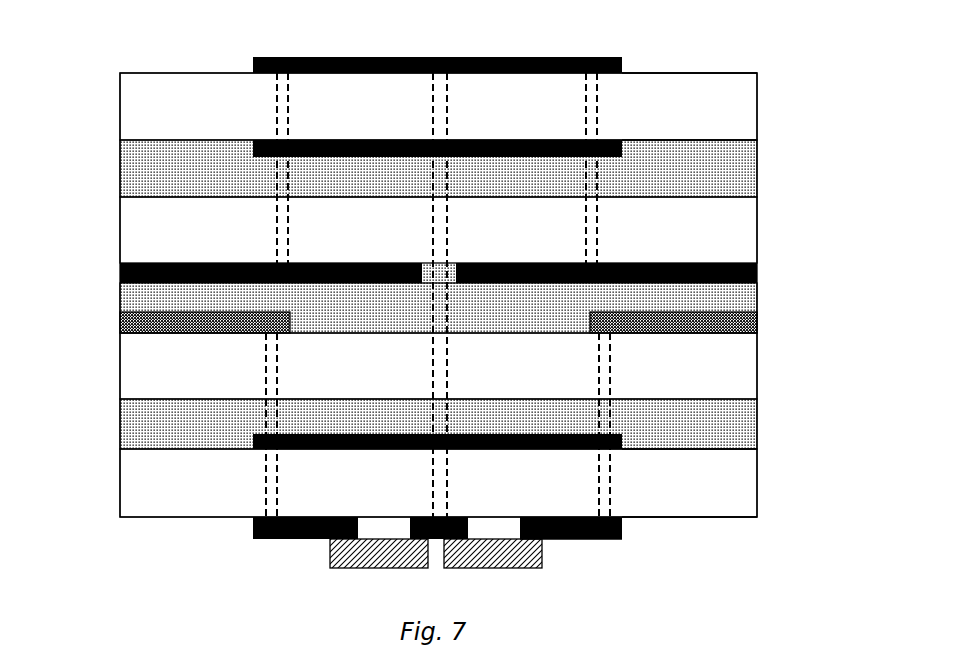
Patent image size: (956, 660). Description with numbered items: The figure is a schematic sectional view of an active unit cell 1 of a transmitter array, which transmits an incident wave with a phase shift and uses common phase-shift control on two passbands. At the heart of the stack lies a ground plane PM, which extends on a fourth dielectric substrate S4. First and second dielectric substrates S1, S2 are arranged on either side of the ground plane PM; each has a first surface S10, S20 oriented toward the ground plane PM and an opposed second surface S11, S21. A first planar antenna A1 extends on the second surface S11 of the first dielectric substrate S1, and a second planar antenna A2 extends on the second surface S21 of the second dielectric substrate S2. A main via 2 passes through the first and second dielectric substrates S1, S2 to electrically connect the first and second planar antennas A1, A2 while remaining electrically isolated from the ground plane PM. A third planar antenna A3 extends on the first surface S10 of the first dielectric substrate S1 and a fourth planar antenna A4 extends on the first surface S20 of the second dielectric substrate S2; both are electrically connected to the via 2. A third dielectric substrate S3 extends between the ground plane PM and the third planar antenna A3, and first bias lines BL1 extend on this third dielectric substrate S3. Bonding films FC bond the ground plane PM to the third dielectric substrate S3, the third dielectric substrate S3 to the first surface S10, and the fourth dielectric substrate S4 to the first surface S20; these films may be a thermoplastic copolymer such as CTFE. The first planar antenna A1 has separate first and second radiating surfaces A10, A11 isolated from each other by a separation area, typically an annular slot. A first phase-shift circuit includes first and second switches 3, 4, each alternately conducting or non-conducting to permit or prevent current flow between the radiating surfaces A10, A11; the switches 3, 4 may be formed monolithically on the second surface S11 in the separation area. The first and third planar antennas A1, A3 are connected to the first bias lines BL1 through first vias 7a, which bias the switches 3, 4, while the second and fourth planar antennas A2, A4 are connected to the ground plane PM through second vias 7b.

The unit cell 1 is at (753, 60).
The via 2 is at (433, 481).
The first switch 3 is at (370, 569).
The second switch 4 is at (510, 569).
The first vias 7a is at (263, 363).
The second vias 7b is at (273, 95).
The first planar antenna A1 is at (575, 541).
The second planar antenna A2 is at (566, 55).
The third planar antenna A3 is at (258, 450).
The fourth planar antenna A4 is at (617, 160).
The first radiating surface A10 is at (436, 540).
The second radiating surface A11 is at (253, 529).
The first bias lines BL1 is at (120, 321).
The bonding film FC is at (133, 164).
The ground plane PM is at (120, 271).
The first dielectric substrate S1 is at (728, 482).
The second dielectric substrate S2 is at (728, 108).
The third dielectric substrate S3 is at (728, 367).
The fourth dielectric substrate S4 is at (145, 233).
The first surface of the first dielectric substrate S10 is at (735, 450).
The second surface of the first dielectric substrate S11 is at (706, 517).
The first surface of the second dielectric substrate S20 is at (728, 140).
The second surface of the second dielectric substrate S21 is at (656, 73).